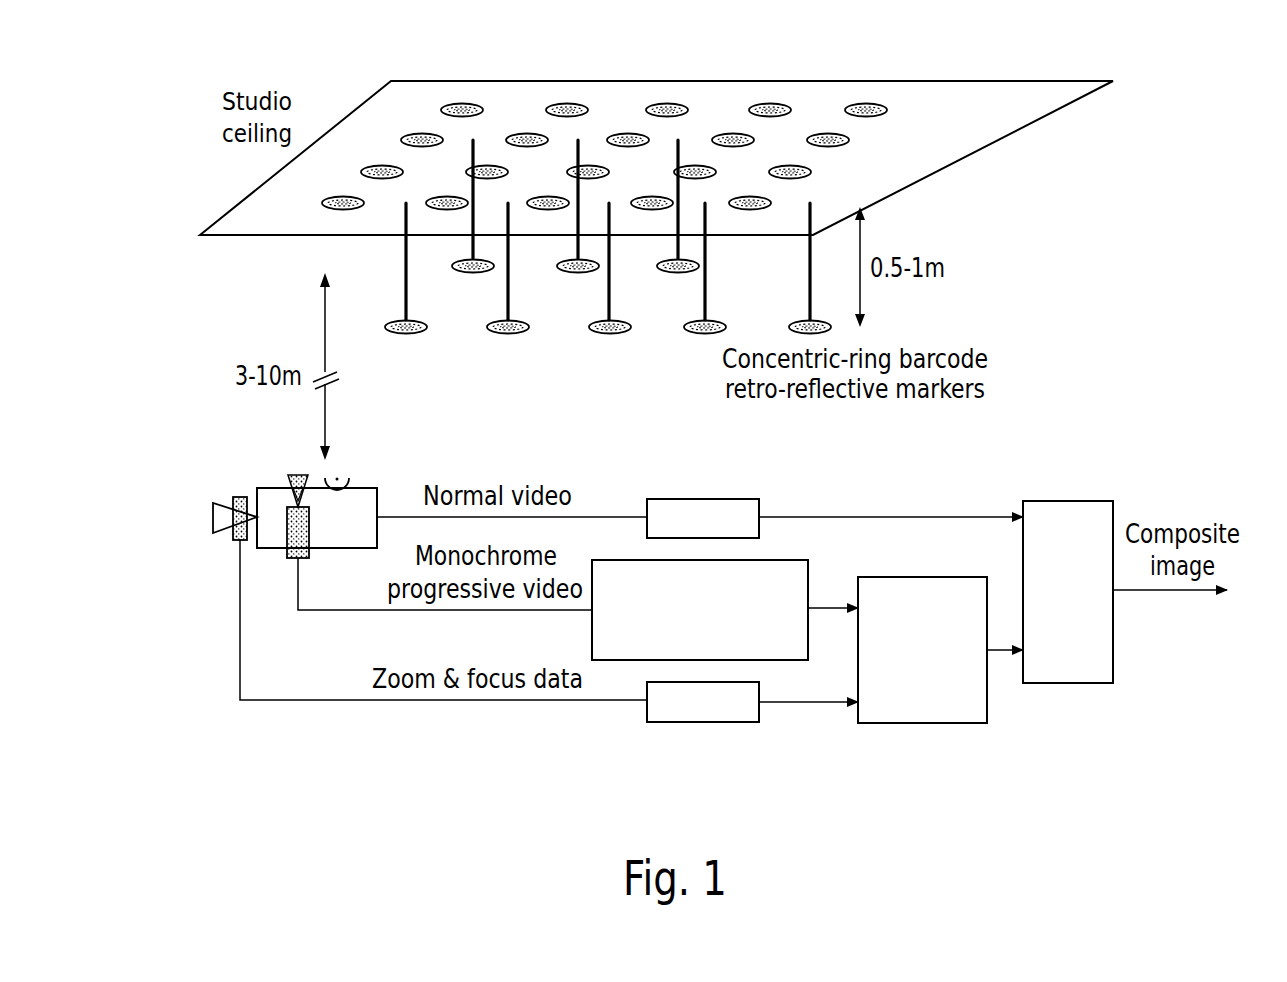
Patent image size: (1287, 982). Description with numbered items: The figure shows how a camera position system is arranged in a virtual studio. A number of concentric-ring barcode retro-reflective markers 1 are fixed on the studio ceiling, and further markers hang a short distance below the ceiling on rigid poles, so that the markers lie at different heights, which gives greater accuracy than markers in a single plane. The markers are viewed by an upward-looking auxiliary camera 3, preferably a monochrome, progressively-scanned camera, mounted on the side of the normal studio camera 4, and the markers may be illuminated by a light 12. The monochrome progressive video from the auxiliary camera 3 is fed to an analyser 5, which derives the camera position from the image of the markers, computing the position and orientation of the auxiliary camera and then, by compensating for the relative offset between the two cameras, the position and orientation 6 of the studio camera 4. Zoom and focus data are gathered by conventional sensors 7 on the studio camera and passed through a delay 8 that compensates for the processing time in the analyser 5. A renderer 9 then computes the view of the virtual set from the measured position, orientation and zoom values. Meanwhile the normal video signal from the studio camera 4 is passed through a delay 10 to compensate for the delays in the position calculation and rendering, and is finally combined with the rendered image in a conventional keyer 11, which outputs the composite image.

The markers 1 is at (305, 223).
The upward-looking camera 3 is at (285, 472).
The studio camera 4 is at (378, 487).
The analyser 5 is at (783, 557).
The position and orientation 6 is at (817, 600).
The sensors 7 is at (233, 543).
The delay 8 is at (698, 722).
The renderer 9 is at (925, 723).
The delay 10 is at (738, 497).
The keyer 11 is at (1075, 498).
The light 12 is at (342, 473).